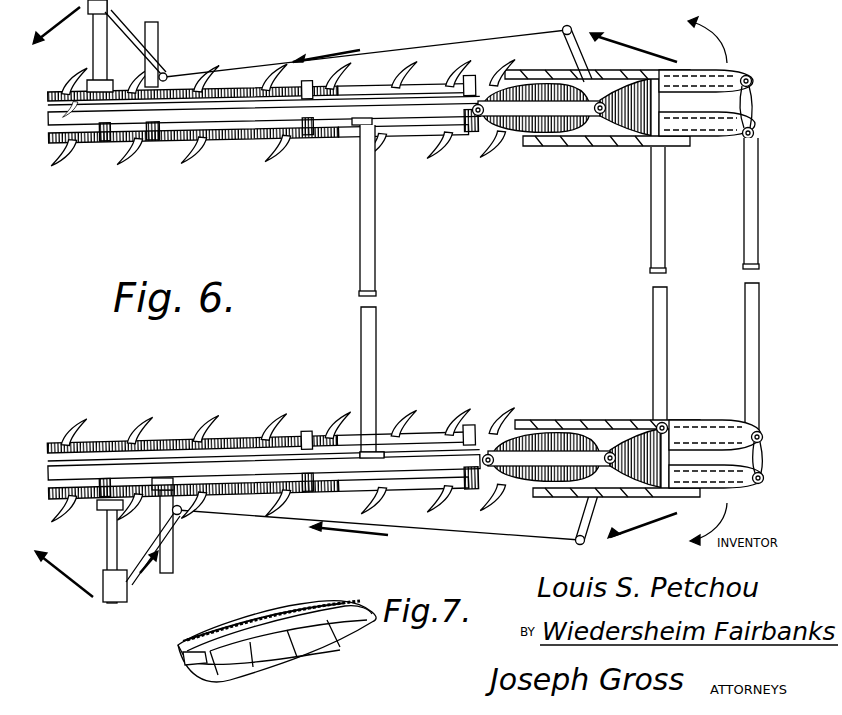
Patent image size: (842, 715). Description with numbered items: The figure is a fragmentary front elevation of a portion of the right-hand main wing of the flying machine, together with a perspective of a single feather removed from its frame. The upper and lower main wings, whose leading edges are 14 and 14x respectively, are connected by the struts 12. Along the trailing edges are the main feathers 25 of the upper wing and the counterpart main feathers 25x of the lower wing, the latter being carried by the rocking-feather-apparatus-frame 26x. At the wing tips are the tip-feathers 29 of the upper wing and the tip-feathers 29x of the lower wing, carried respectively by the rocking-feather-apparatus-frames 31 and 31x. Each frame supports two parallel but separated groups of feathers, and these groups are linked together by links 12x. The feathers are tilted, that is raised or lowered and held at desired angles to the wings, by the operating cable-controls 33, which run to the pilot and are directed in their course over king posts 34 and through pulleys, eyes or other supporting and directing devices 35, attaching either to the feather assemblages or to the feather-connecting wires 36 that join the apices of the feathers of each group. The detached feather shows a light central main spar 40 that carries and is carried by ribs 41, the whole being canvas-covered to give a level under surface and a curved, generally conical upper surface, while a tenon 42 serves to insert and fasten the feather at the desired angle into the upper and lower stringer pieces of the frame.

In FIG. 6, the strut 12 is at (652, 217).
In FIG. 6, the link 12x is at (758, 230).
In FIG. 6, the leading edge of upper main wing 14 is at (347, 126).
In FIG. 6, the leading edge of lower main wing 14x is at (233, 470).
In FIG. 6, the main feathers 25 is at (285, 87).
In FIG. 7, the main feathers 25 is at (315, 598).
In FIG. 6, the main feathers 25x is at (172, 441).
In FIG. 6, the rocking-feather-apparatus-frame 26x is at (438, 482).
In FIG. 6, the tip-feathers 29 is at (733, 80).
In FIG. 6, the tip-feathers 29x is at (772, 463).
In FIG. 6, the rocking-feather-apparatus-frame 31 is at (510, 125).
In FIG. 6, the rocking-feather-apparatus-frame 31x is at (533, 420).
In FIG. 6, the operating cable-controls 33 is at (470, 533).
In FIG. 6, the king posts 34 is at (93, 66).
In FIG. 6, the pulleys, eyes, or other supporting and directing devices 35 is at (167, 73).
In FIG. 6, the feather-connecting wires 36 is at (178, 514).
In FIG. 7, the central main spar 40 is at (220, 670).
In FIG. 7, the ribs 41 is at (255, 660).
In FIG. 7, the tenon 42 is at (183, 660).